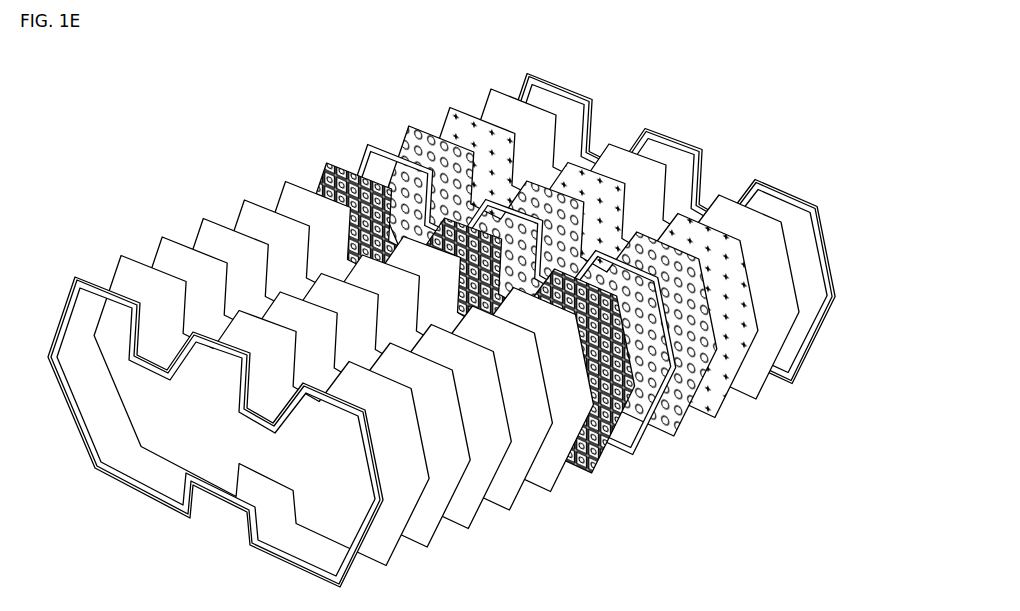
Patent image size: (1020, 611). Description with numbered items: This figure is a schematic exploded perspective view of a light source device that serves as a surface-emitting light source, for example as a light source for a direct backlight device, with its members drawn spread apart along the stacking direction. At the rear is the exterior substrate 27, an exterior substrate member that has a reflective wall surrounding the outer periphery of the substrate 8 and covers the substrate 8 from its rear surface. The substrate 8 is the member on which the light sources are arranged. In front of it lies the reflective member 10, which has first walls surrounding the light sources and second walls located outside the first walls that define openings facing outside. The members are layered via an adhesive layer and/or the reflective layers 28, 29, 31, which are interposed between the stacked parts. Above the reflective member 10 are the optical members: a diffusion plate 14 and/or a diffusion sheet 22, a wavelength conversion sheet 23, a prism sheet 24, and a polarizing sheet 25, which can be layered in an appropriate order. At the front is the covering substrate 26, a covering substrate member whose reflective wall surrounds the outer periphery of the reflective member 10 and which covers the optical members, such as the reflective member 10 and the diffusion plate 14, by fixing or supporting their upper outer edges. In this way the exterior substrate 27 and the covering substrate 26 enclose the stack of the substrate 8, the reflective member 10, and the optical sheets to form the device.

The covering substrate 26 is at (100, 477).
The polarizing sheet 25 is at (127, 273).
The prism sheet 24 is at (165, 253).
The wavelength conversion sheet 23 is at (207, 237).
The diffusion sheet 22 is at (250, 213).
The diffusion plate 14 is at (548, 483).
The reflective member 10 is at (597, 473).
The reflective layer 31 is at (650, 440).
The reflective layer 29 is at (680, 418).
The substrate 8 is at (723, 392).
The reflective layer 28 is at (760, 363).
The exterior substrate 27 is at (803, 253).